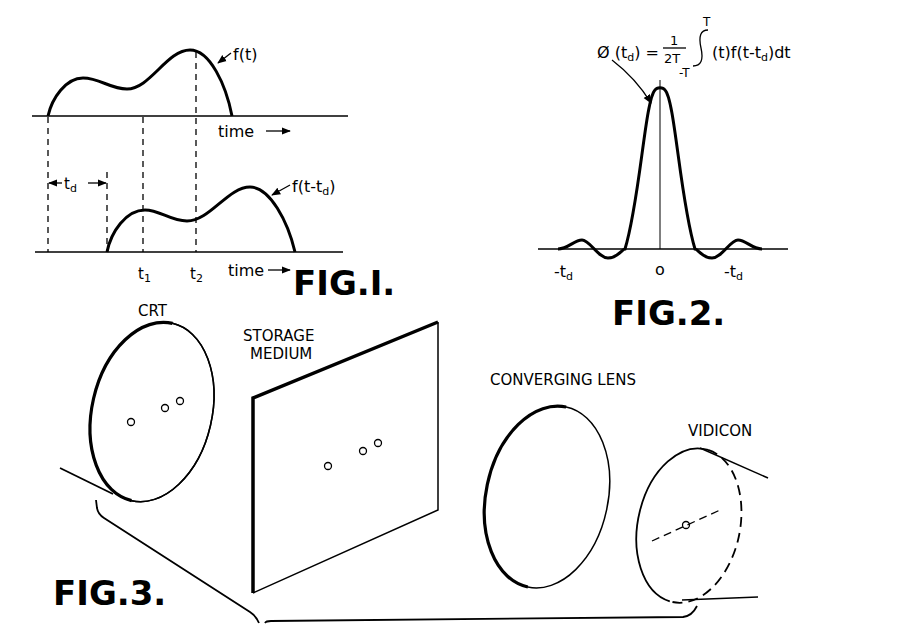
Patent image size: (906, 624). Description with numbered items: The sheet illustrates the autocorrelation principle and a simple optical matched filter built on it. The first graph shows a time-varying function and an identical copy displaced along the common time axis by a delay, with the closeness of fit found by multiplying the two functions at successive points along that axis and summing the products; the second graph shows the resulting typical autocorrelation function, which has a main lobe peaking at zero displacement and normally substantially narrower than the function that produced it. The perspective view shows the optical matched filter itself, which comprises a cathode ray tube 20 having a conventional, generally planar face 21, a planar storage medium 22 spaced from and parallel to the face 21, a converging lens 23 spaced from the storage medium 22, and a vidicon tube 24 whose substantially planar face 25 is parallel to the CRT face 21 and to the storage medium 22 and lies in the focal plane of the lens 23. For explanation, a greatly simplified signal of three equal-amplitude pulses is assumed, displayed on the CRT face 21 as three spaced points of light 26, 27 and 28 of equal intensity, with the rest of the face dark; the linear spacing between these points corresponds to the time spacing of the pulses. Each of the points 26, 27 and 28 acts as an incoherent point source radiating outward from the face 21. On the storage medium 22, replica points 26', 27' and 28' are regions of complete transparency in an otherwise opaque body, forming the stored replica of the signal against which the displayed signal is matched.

The cathode ray tube 20 is at (154, 321).
The CRT face 21 is at (187, 346).
The storage medium 22 is at (290, 383).
The converging lens 23 is at (523, 421).
The vidicon tube 24 is at (753, 470).
The vidicon face 25 is at (670, 462).
The point of light 26 is at (119, 412).
The point of light 27 is at (150, 398).
The point of light 28 is at (169, 388).
The replica point 26' is at (311, 458).
The replica point 27' is at (345, 441).
The replica point 28' is at (366, 429).